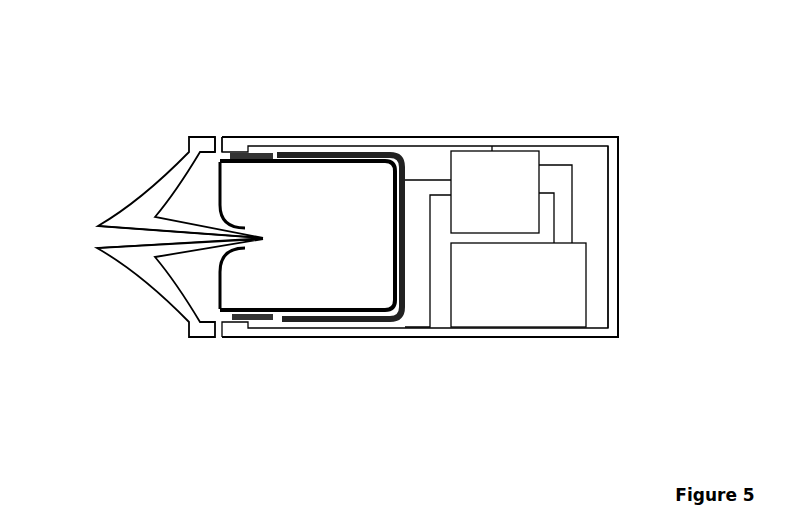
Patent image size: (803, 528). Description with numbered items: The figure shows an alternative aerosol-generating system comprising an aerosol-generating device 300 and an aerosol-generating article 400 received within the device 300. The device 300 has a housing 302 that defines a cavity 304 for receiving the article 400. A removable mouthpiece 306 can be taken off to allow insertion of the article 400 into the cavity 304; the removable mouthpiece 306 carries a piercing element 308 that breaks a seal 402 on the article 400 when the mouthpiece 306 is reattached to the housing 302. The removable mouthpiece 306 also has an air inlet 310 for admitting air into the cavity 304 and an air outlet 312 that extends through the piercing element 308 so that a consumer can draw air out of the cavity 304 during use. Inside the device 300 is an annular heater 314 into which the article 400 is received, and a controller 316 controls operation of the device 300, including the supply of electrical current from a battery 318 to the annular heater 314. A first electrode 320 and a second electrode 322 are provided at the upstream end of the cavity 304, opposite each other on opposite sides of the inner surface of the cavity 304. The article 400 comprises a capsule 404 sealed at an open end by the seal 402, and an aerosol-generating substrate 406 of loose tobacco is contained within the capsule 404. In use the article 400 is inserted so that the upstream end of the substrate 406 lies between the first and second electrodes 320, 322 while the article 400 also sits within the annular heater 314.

The aerosol-generating device 300 is at (572, 133).
The housing 302 is at (607, 197).
The cavity 304 is at (383, 312).
The removable mouthpiece 306 is at (158, 198).
The piercing element 308 is at (192, 247).
The air inlet 310 is at (220, 137).
The air outlet 312 is at (113, 237).
The annular heater 314 is at (345, 153).
The controller 316 is at (478, 199).
The battery 318 is at (497, 292).
The first electrode 320 is at (237, 322).
The second electrode 322 is at (240, 151).
The aerosol-generating article 400 is at (284, 304).
The seal 402 is at (247, 221).
The capsule 404 is at (330, 313).
The aerosol-generating substrate 406 is at (333, 210).